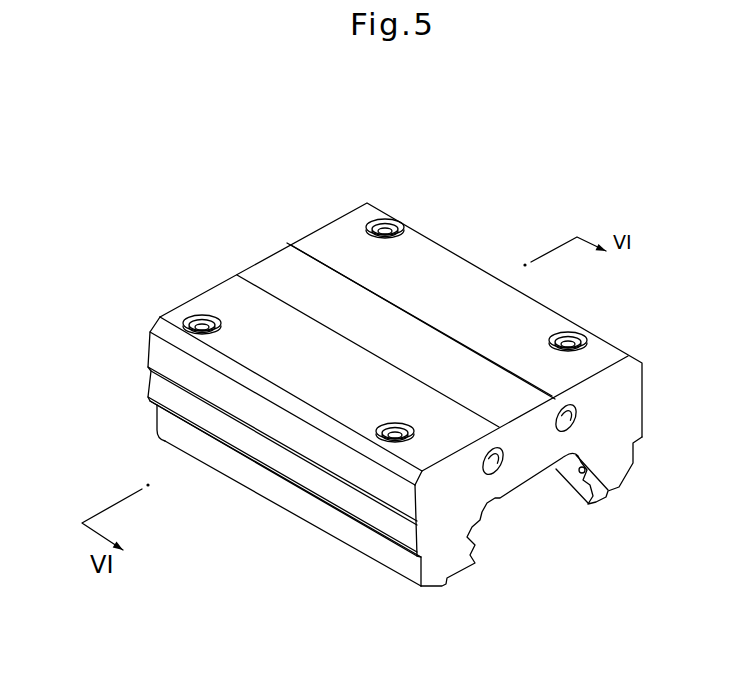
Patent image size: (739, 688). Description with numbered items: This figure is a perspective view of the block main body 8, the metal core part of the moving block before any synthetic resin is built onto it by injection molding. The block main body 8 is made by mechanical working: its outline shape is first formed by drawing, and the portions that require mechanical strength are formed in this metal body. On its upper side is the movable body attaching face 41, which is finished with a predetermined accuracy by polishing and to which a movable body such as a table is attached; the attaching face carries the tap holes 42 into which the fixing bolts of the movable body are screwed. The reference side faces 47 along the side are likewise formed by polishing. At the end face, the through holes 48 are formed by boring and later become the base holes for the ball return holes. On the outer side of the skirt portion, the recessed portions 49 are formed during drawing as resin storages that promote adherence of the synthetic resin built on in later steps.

The block main body 8 is at (211, 493).
The movable body attaching face 41 is at (255, 317).
The tap holes 42 is at (385, 219).
The reference side faces 47 is at (325, 448).
The through holes 48 is at (565, 420).
The recessed portions 49 is at (267, 473).